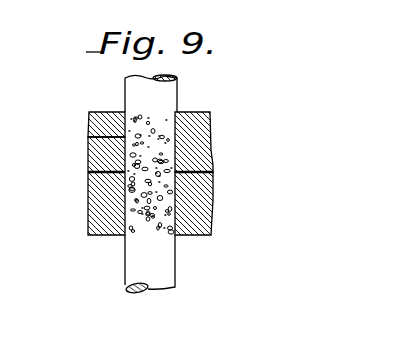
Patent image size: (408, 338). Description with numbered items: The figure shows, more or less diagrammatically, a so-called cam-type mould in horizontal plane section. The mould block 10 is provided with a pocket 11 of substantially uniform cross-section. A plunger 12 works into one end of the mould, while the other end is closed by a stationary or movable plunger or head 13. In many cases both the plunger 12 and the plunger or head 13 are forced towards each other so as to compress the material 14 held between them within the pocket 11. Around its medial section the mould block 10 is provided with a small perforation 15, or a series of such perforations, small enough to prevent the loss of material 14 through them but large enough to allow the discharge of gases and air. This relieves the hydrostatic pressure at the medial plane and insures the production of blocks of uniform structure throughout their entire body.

The mould block 10 is at (148, 160).
The pocket 11 is at (89, 137).
The plunger 12 is at (150, 263).
The plunger or head 13 is at (158, 92).
The material 14 is at (148, 195).
The perforation 15 is at (92, 177).